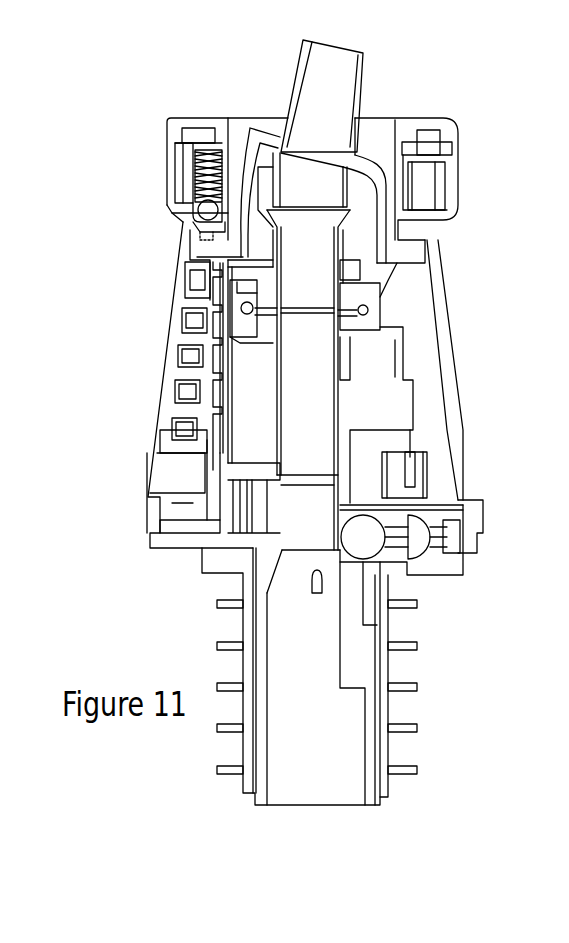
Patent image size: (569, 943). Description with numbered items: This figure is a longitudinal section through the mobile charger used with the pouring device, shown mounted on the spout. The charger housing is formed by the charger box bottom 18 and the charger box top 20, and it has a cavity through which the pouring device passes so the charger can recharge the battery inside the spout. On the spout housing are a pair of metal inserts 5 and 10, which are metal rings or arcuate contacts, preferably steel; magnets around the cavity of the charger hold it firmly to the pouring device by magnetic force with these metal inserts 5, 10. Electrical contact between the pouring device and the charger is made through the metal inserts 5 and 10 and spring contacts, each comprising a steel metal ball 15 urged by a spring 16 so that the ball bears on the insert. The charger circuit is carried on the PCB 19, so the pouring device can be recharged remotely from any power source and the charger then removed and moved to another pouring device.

The metal insert 5 is at (213, 227).
The metal insert 10 is at (410, 229).
The metal ball 15 is at (207, 211).
The spring 16 is at (193, 178).
The charger box bottom 18 is at (167, 125).
The PCB 19 is at (188, 152).
The charger box top 20 is at (193, 204).